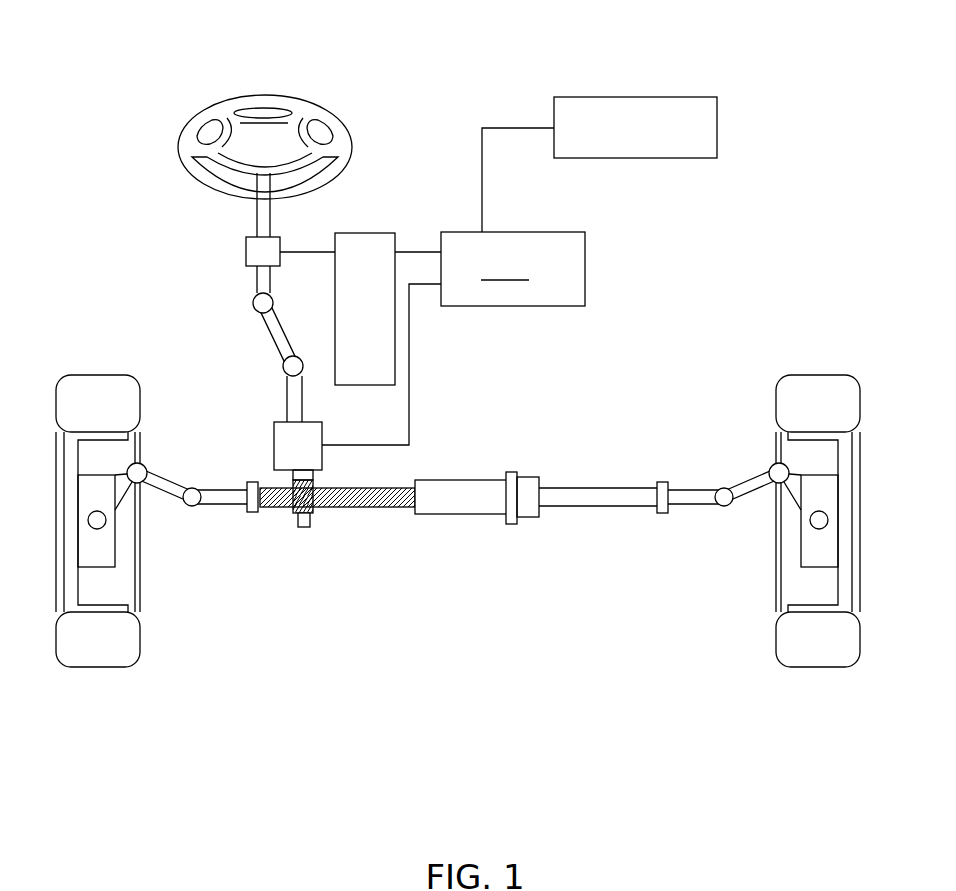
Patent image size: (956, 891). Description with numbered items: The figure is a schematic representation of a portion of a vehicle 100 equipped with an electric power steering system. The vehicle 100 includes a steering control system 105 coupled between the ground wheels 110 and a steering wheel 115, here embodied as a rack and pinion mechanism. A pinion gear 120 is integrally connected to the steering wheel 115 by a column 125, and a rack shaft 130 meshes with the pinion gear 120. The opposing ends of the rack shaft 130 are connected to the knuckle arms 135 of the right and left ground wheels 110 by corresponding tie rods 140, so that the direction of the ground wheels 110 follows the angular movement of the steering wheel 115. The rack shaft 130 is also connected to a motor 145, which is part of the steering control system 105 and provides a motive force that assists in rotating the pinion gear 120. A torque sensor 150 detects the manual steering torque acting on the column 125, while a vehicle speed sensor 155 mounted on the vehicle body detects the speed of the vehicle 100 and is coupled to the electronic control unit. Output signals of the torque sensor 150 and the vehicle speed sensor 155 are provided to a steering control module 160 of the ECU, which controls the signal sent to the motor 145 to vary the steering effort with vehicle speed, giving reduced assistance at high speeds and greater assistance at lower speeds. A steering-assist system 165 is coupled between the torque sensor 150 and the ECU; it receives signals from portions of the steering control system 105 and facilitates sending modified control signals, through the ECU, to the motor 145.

The vehicle 100 is at (412, 60).
The steering control system 105 is at (264, 518).
The ground wheels 110 is at (97, 375).
The steering wheel 115 is at (178, 145).
The pinion gear 120 is at (296, 514).
The column 125 is at (257, 218).
The rack shaft 130 is at (365, 508).
The knuckle arms 135 is at (123, 468).
The tie rods 140 is at (162, 497).
The motor 145 is at (274, 447).
The torque sensor 150 is at (246, 256).
The vehicle speed sensor 155 is at (618, 138).
The steering control module 160 is at (460, 232).
The steering-assist system 165 is at (346, 313).